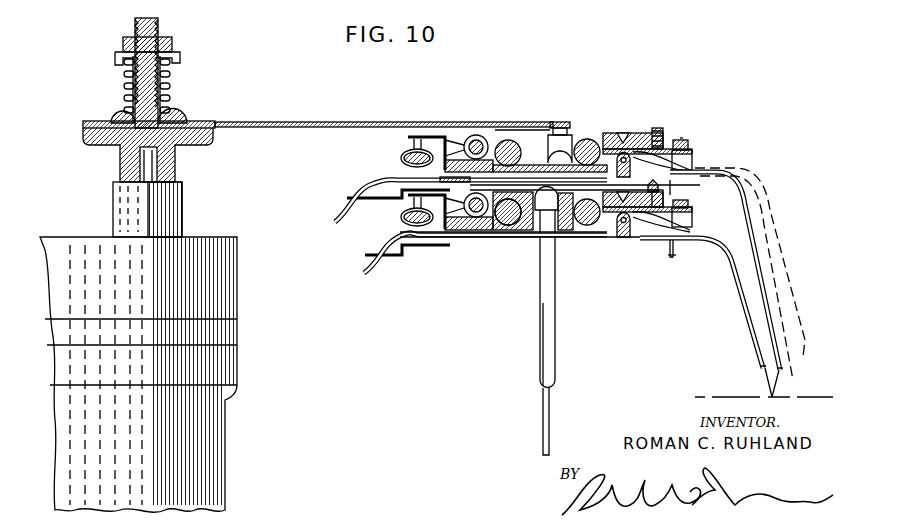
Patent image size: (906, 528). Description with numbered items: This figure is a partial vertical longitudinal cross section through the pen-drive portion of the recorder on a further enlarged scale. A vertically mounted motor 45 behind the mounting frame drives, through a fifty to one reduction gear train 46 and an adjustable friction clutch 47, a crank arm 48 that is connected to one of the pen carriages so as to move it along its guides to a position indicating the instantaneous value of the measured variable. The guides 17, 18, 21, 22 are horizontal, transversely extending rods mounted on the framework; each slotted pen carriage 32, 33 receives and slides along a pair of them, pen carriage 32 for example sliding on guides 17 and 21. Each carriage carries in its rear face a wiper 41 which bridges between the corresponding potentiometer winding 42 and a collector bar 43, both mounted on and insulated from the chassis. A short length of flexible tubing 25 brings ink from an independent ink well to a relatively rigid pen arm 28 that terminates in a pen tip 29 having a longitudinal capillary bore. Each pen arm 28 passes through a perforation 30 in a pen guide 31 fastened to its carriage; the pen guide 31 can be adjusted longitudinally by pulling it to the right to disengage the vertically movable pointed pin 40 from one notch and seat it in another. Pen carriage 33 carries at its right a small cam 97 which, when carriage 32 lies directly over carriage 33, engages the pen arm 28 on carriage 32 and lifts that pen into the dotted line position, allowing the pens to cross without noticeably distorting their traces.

The guide 17 is at (512, 143).
The guide 18 is at (508, 226).
The guide 21 is at (598, 135).
The guide 22 is at (587, 228).
The flexible tubing 25 is at (345, 213).
The pen arm 28 is at (740, 268).
The pen tip 29 is at (772, 395).
The perforation 30 is at (687, 227).
The pen guide 31 is at (688, 211).
The pen carriage 32 is at (587, 138).
The pen carriage 33 is at (540, 225).
The pointed pin 40 is at (617, 132).
The wiper 41 is at (435, 135).
The potentiometer winding 42 is at (400, 156).
The collector bar 43 is at (475, 140).
The motor 45 is at (195, 455).
The reduction gear train 46 is at (195, 278).
The adjustable friction clutch 47 is at (112, 117).
The crank arm 48 is at (360, 121).
The cam 97 is at (673, 190).